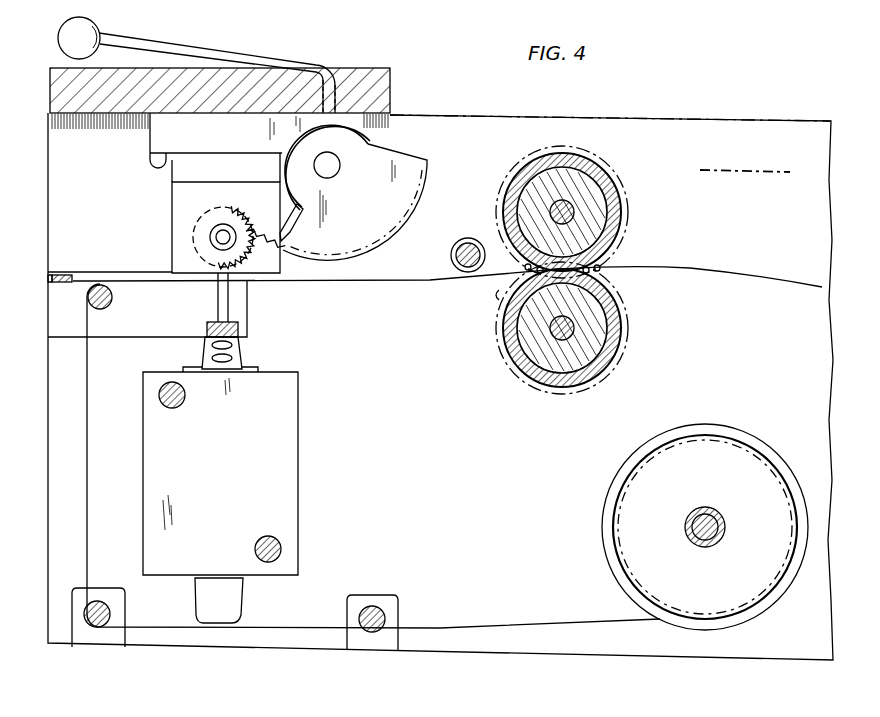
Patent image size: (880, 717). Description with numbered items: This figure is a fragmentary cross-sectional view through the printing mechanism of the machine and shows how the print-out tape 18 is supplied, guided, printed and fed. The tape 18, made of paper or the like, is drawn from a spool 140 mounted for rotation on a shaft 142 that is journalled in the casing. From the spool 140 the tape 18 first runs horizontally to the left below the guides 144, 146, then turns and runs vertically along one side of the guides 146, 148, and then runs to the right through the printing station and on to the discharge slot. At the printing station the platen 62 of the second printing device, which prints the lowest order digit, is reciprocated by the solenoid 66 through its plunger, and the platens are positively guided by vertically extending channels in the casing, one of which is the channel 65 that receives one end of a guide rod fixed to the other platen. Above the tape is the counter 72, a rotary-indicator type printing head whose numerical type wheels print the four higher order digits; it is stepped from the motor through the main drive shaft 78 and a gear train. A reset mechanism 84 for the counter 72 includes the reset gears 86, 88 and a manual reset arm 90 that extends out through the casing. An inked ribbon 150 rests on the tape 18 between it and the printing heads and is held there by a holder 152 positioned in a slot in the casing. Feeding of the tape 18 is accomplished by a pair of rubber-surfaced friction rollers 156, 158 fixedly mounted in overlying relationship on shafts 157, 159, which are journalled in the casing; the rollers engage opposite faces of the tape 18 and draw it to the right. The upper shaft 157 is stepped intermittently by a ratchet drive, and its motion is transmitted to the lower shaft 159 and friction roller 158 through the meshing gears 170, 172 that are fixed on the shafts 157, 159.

The print-out tape 18 is at (86, 466).
The platen 62 is at (236, 358).
The channel 65 is at (220, 303).
The solenoid 66 is at (220, 495).
The counter 72 is at (226, 227).
The main drive shaft 78 is at (460, 251).
The reset mechanism 84 is at (280, 230).
The reset gear 86 is at (238, 262).
The reset gear 88 is at (366, 254).
The manual reset arm 90 is at (191, 44).
The spool 140 is at (612, 507).
The shaft 142 is at (697, 523).
The guide 144 is at (370, 607).
The guide 146 is at (97, 605).
The guide 148 is at (103, 305).
The inked ribbon 150 is at (122, 273).
The holder 152 is at (50, 279).
The friction roller 156 is at (593, 208).
The shaft 157 is at (571, 187).
The friction roller 158 is at (597, 338).
The shaft 159 is at (570, 304).
The gear 170 is at (524, 266).
The gear 172 is at (497, 310).